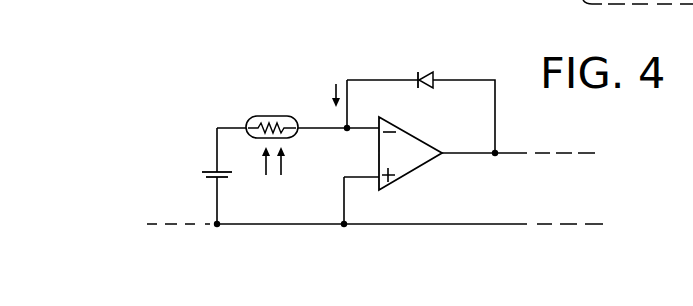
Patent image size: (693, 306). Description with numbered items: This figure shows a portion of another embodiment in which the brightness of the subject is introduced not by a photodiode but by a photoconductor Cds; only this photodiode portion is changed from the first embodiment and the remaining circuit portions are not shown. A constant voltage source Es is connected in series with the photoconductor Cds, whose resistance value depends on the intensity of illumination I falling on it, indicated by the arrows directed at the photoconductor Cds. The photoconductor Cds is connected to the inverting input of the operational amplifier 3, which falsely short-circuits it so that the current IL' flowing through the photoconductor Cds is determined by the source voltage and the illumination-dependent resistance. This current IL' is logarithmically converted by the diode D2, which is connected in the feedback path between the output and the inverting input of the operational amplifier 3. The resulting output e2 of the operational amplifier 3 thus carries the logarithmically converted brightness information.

The photoconductor Cds is at (278, 115).
The constant voltage source Es is at (203, 172).
The incident light I is at (285, 165).
The current flowing in the photoconductor IL' is at (314, 83).
The diode D2 is at (428, 72).
The operational amplifier 3 is at (422, 162).
The output of the operational amplifier e2 is at (495, 158).